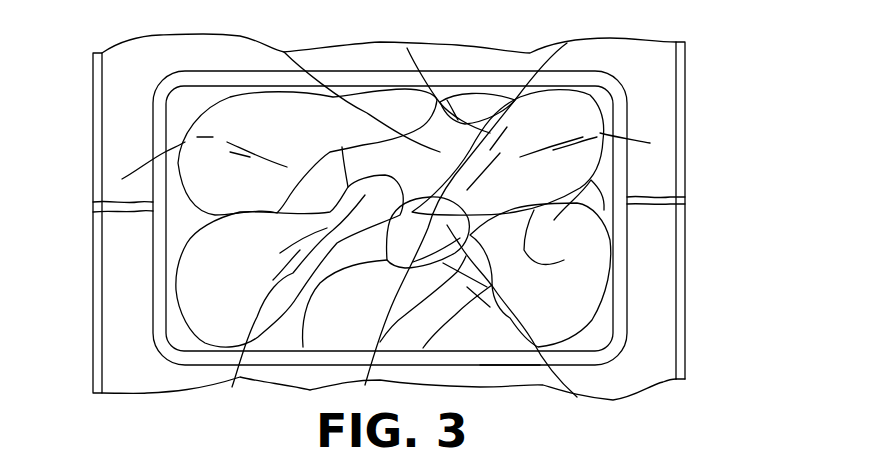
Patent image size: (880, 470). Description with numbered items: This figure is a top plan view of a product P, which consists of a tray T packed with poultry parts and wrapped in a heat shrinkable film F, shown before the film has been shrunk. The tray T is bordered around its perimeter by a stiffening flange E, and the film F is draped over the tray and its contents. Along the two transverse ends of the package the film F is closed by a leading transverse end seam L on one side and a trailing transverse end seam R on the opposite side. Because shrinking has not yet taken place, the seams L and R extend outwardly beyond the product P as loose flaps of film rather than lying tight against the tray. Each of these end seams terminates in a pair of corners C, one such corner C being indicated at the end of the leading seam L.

The wrapping film F is at (637, 62).
The package P is at (718, 100).
The right side rail R is at (93, 287).
The left side rail L is at (683, 280).
The tray T is at (617, 332).
The corner C is at (685, 379).
The tray edge E is at (508, 364).